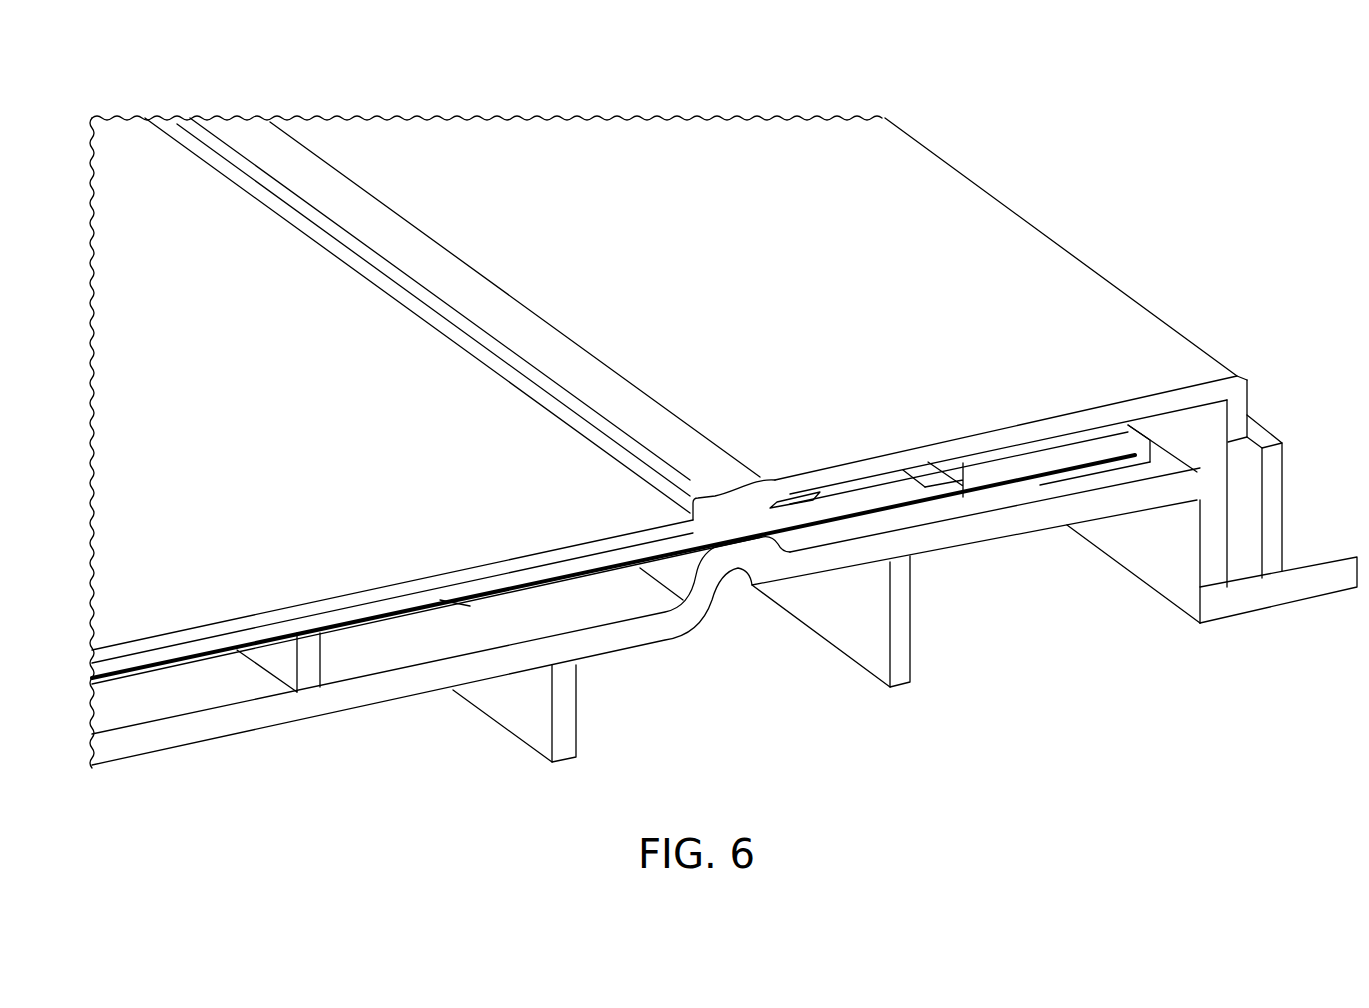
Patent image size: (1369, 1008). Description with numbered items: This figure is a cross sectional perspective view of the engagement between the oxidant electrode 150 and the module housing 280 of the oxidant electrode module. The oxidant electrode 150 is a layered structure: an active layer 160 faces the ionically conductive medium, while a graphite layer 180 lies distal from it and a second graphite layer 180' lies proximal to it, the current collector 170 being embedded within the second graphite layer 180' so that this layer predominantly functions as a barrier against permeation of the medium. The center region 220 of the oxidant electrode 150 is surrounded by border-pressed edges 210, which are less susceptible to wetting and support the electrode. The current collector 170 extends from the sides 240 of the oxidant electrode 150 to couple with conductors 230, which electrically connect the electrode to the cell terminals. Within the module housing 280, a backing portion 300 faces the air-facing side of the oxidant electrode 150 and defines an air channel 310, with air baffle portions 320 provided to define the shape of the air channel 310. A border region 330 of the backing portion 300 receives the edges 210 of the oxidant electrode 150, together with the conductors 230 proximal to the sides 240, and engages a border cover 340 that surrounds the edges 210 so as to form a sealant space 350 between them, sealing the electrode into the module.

The oxidant electrode 150 is at (142, 512).
The active layer 160 is at (455, 585).
The current collector 170 is at (580, 570).
The graphite layer 180 is at (448, 675).
The second graphite layer 180' is at (656, 529).
The edges 210 is at (905, 475).
The center region 220 is at (253, 377).
The conductors 230 is at (1113, 462).
The sides 240 is at (945, 475).
The module housing 280 is at (1262, 402).
The backing portion 300 is at (622, 642).
The air channel 310 is at (188, 692).
The air baffle portions 320 is at (306, 668).
The border region 330 is at (862, 533).
The border cover 340 is at (955, 247).
The sealant space 350 is at (1192, 425).